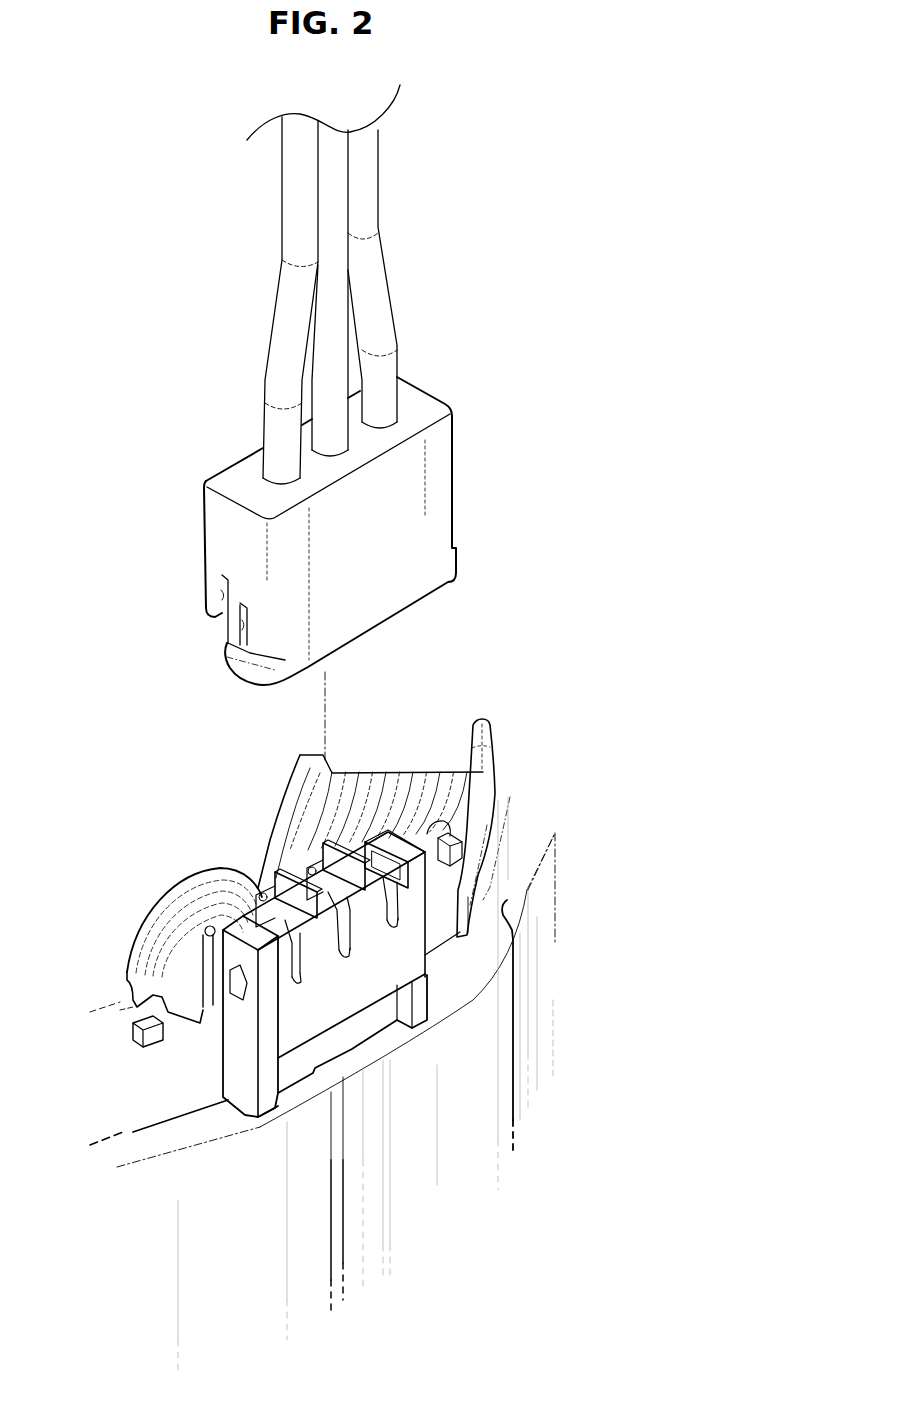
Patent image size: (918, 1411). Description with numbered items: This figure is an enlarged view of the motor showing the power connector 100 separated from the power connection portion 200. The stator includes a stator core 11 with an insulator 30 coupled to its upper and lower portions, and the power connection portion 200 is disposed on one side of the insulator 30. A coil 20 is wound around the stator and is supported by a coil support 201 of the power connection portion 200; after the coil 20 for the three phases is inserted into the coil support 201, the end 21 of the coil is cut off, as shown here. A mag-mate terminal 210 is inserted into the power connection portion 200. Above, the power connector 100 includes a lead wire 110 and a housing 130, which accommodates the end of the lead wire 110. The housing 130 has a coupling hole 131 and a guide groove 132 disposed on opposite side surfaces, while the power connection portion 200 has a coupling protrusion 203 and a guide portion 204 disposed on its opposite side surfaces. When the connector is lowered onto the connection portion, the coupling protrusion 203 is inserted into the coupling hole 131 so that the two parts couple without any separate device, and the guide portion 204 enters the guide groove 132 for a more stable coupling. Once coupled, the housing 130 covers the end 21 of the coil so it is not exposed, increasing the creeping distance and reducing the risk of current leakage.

The power connector 100 is at (447, 210).
The lead wire 110 is at (378, 262).
The housing 130 is at (455, 464).
The coupling hole 131 is at (237, 630).
The guide groove 132 is at (220, 592).
The coil 20 is at (408, 786).
The insulator 30 is at (487, 771).
The power connection portion 200 is at (413, 965).
The coil support 201 is at (410, 890).
The end of the coil 21 is at (400, 926).
The guide portion 204 is at (213, 977).
The coupling protrusion 203 is at (232, 1010).
The mag-mate terminal 210 is at (262, 918).
The stator core 11 is at (507, 1057).